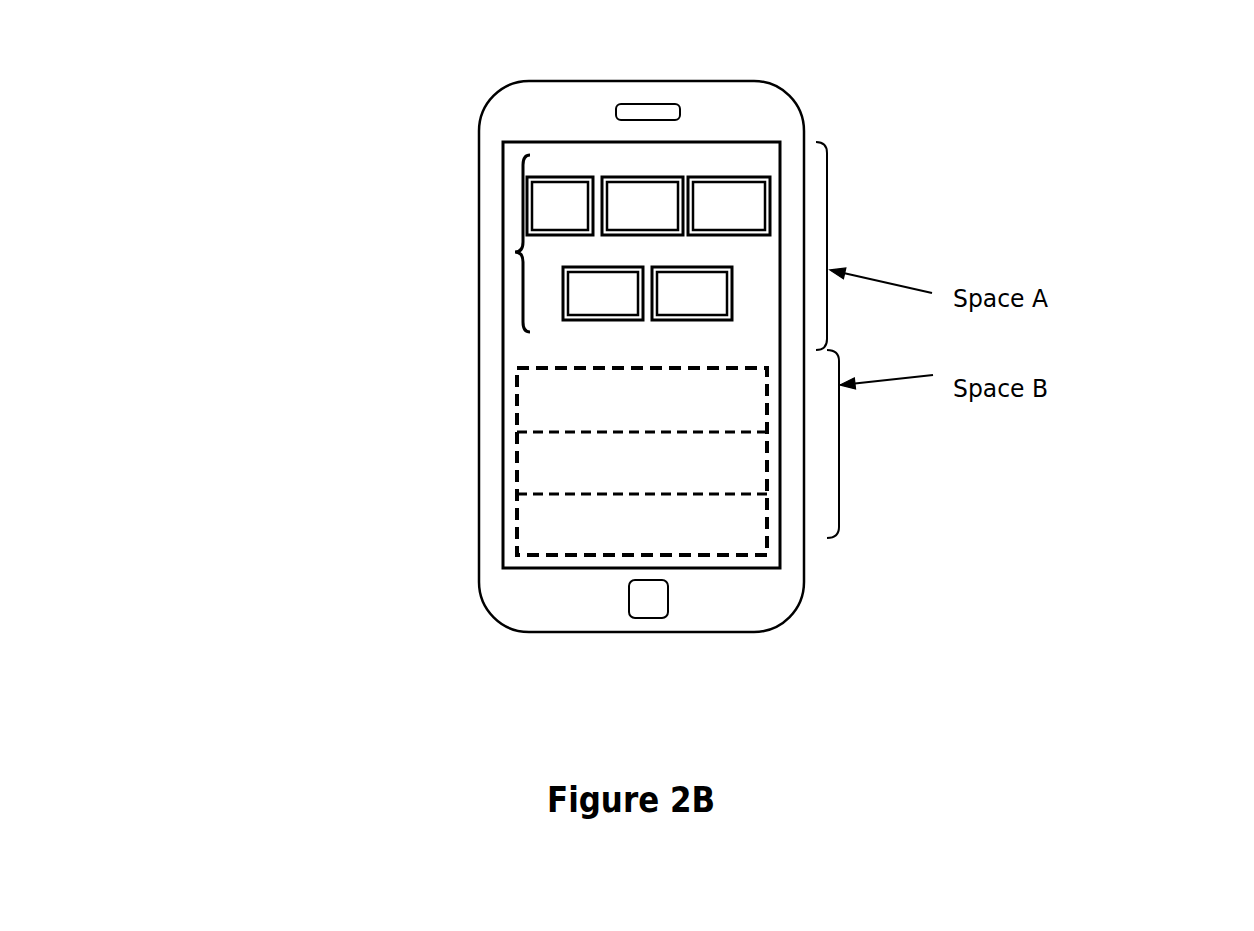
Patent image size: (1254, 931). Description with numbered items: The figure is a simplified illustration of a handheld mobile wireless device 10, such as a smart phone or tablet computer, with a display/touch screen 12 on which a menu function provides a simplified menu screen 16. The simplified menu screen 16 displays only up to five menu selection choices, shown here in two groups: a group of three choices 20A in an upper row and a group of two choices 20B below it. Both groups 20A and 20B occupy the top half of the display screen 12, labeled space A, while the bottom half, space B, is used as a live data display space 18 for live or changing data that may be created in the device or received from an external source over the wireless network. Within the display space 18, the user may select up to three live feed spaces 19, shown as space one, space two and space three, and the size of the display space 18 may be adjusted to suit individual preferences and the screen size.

The handheld mobile wireless device 10 is at (476, 174).
The display/touch screen 12 is at (490, 314).
The simplified menu screen 16 is at (698, 226).
The live data display space 18 is at (849, 513).
The live feed spaces 19 is at (720, 525).
The menu choice group of three choices 20A is at (782, 188).
The menu choice group of two choices 20B is at (756, 286).